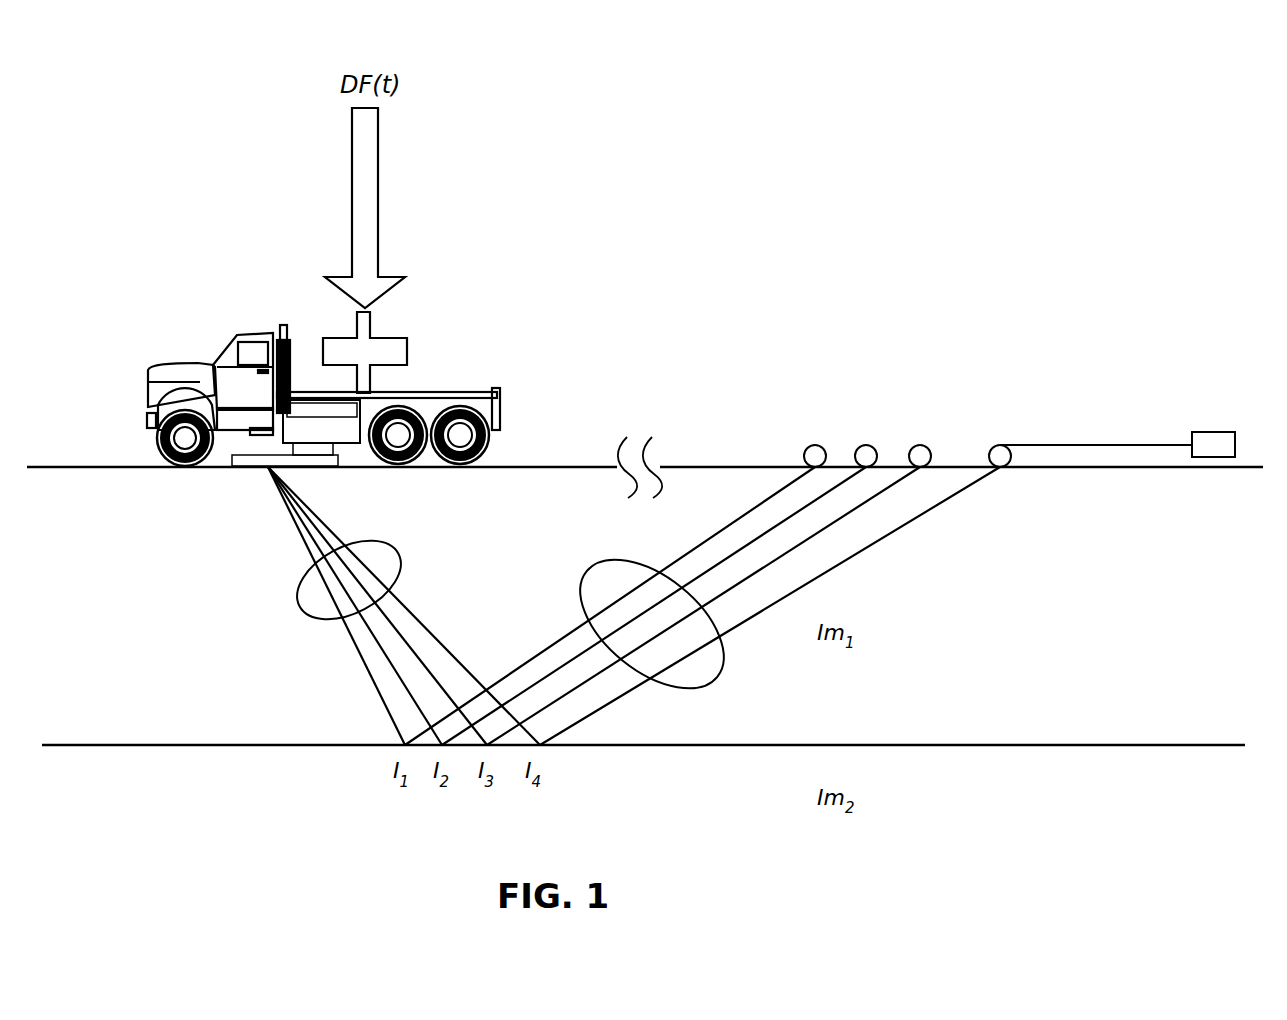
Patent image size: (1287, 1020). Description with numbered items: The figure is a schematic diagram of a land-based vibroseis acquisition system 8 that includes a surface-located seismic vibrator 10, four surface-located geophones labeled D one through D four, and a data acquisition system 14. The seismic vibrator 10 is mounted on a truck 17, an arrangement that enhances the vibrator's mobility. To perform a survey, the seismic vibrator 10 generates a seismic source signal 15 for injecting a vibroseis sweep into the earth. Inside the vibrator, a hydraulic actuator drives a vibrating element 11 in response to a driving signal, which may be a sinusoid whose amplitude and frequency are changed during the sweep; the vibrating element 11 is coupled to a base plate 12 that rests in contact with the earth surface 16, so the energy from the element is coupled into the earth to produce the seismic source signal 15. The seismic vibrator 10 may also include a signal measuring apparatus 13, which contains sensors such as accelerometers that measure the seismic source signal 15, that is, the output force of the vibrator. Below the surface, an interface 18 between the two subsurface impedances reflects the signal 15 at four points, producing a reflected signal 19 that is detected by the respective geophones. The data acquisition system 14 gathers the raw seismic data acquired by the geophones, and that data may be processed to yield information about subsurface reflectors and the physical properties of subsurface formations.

The vibroseis acquisition system 8 is at (1045, 382).
The seismic vibrator 10 is at (112, 310).
The vibrating element 11 is at (405, 341).
The base plate 12 is at (248, 491).
The signal measuring apparatus 13 is at (350, 467).
The data acquisition system 14 is at (1239, 427).
The seismic source signal 15 is at (316, 588).
The earth surface 16 is at (641, 454).
The truck 17 is at (323, 372).
The interface 18 is at (643, 726).
The reflected signal 19 is at (681, 624).